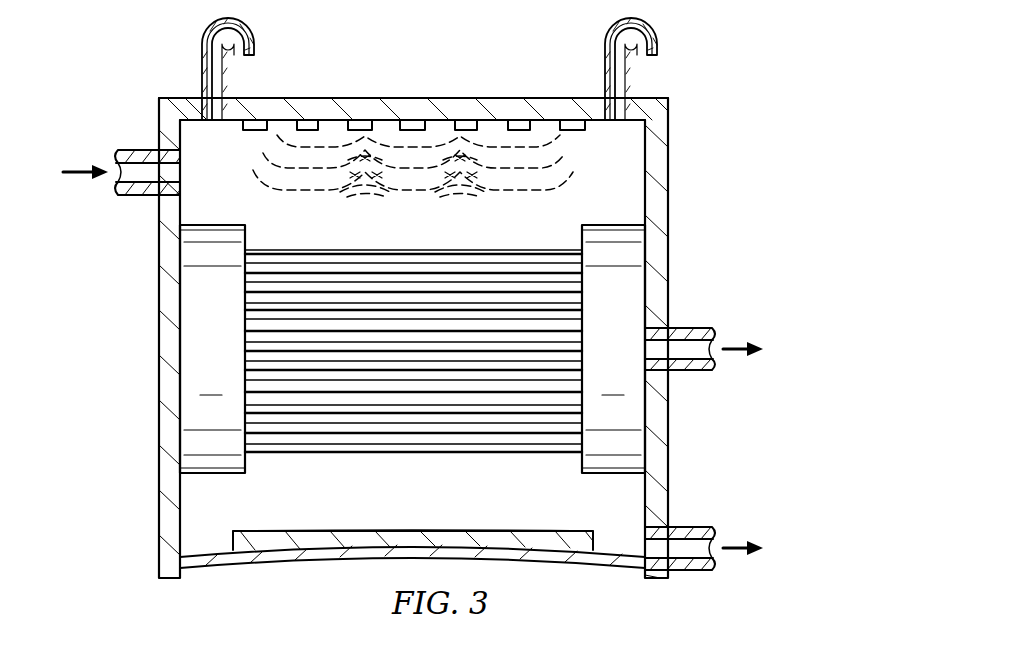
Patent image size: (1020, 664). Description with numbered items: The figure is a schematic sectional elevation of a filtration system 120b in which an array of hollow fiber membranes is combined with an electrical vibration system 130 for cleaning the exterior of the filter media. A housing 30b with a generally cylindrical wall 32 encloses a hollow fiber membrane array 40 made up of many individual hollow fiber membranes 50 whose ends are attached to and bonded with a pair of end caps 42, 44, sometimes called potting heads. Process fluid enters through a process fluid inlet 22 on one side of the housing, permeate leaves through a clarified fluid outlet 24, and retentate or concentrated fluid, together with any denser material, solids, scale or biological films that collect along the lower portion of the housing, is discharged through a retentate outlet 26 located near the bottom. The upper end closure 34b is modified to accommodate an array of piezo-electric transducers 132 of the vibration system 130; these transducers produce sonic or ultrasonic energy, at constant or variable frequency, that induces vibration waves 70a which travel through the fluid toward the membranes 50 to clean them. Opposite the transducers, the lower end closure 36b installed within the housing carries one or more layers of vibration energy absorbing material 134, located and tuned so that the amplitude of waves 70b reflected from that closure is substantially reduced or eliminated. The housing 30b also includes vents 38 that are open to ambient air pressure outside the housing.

The process fluid inlet 22 is at (145, 150).
The clarified fluid outlet 24 is at (696, 328).
The retentate outlet 26 is at (678, 571).
The housing 30b is at (150, 434).
The cylindrical wall 32 is at (669, 212).
The end closure 34b is at (364, 98).
The end closure 36b is at (589, 568).
The vents 38 is at (202, 72).
The hollow fiber membrane array 40 is at (286, 468).
The end cap 42 is at (212, 475).
The end cap 44 is at (610, 475).
The hollow fiber membranes 50 is at (338, 410).
The vibration waves 70a is at (298, 196).
The reflected waves 70b is at (364, 196).
The filtration system 120b is at (271, 603).
The electrical vibration system 130 is at (570, 150).
The piezo-electric transducers 132 is at (262, 118).
The vibration energy absorbing material 134 is at (395, 530).